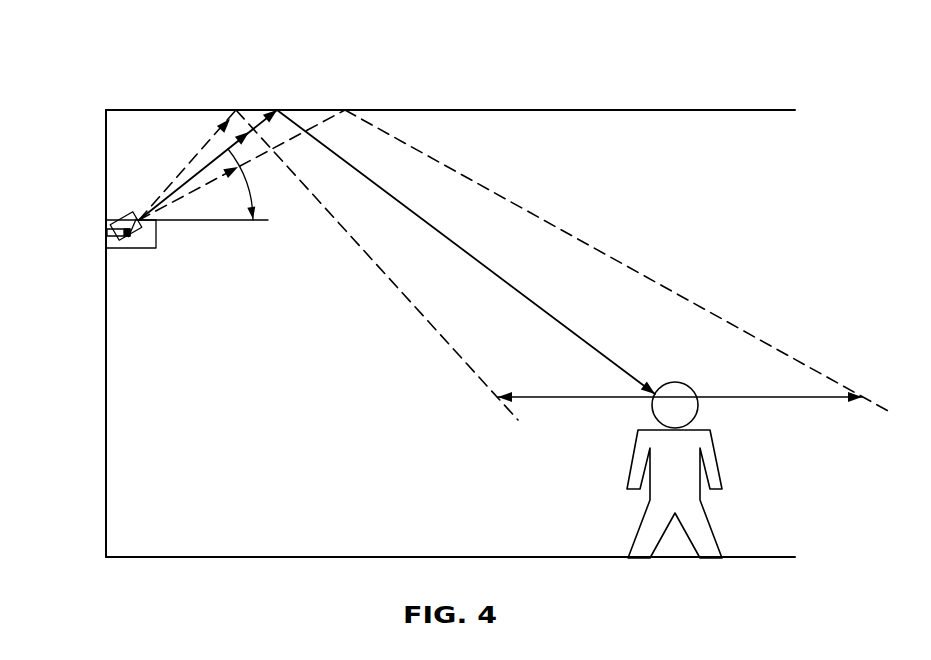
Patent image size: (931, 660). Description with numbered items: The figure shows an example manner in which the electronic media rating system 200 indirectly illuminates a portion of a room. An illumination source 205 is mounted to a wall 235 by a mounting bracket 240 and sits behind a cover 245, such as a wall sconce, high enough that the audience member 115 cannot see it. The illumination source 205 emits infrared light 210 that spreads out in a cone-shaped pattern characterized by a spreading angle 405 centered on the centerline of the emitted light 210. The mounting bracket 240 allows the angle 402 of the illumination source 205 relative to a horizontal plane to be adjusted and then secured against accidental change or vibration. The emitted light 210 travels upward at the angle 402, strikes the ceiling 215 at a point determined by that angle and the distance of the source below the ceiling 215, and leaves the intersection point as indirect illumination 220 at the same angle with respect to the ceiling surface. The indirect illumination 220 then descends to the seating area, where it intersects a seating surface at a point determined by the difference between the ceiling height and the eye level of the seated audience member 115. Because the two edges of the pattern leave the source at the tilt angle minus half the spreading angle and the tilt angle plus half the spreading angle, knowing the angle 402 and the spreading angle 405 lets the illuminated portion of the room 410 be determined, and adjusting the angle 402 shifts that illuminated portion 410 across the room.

The audience member 115 is at (713, 470).
The electronic media rating system 200 is at (734, 38).
The illumination source 205 is at (84, 198).
The light 210 is at (199, 165).
The ceiling 215 is at (450, 131).
The indirect illumination 220 is at (475, 252).
The wall 235 is at (64, 333).
The mounting bracket 240 is at (76, 213).
The cover 245 is at (173, 247).
The angle θ 402 is at (242, 201).
The spreading angle φ 405 is at (514, 231).
The illuminated portion of the room 410 is at (680, 351).